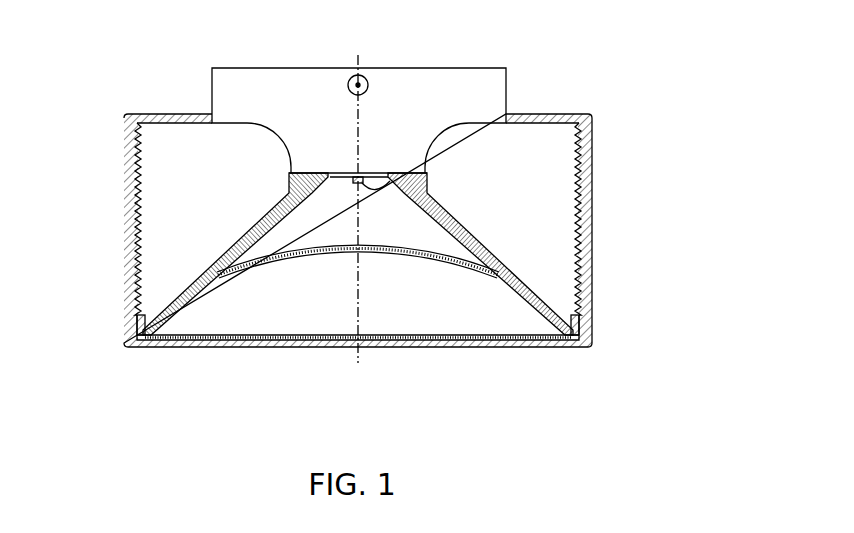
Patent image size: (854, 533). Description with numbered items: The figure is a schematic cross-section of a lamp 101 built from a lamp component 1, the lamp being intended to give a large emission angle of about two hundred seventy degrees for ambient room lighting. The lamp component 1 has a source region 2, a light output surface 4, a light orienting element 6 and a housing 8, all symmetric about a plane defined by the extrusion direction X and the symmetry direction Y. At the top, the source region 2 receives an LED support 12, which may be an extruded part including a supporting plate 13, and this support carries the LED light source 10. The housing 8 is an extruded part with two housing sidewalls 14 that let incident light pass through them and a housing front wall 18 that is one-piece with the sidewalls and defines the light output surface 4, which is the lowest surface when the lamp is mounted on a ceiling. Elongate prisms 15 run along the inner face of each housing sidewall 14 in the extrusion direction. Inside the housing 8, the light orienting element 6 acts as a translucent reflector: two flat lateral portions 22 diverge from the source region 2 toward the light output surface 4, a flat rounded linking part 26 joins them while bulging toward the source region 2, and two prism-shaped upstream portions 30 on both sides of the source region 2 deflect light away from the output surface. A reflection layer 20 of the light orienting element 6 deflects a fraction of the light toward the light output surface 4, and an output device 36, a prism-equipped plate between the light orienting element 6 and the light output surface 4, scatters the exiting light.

The lamp component 1 is at (620, 173).
The lamp 101 is at (675, 35).
The source region 2 is at (318, 153).
The light output surface 4 is at (583, 388).
The light orienting element 6 is at (551, 297).
The housing 8 is at (669, 321).
The LED light source 10 is at (393, 173).
The LED support 12 is at (506, 79).
The supporting plate 13 is at (382, 173).
The housing sidewalls 14 is at (589, 312).
The elongate prisms 15 is at (149, 136).
The housing front wall 18 is at (528, 348).
The reflection layer 20 is at (297, 212).
The lateral portions 22 is at (494, 253).
The linking part 26 is at (442, 259).
The upstream portions 30 is at (289, 181).
The output device 36 is at (138, 316).